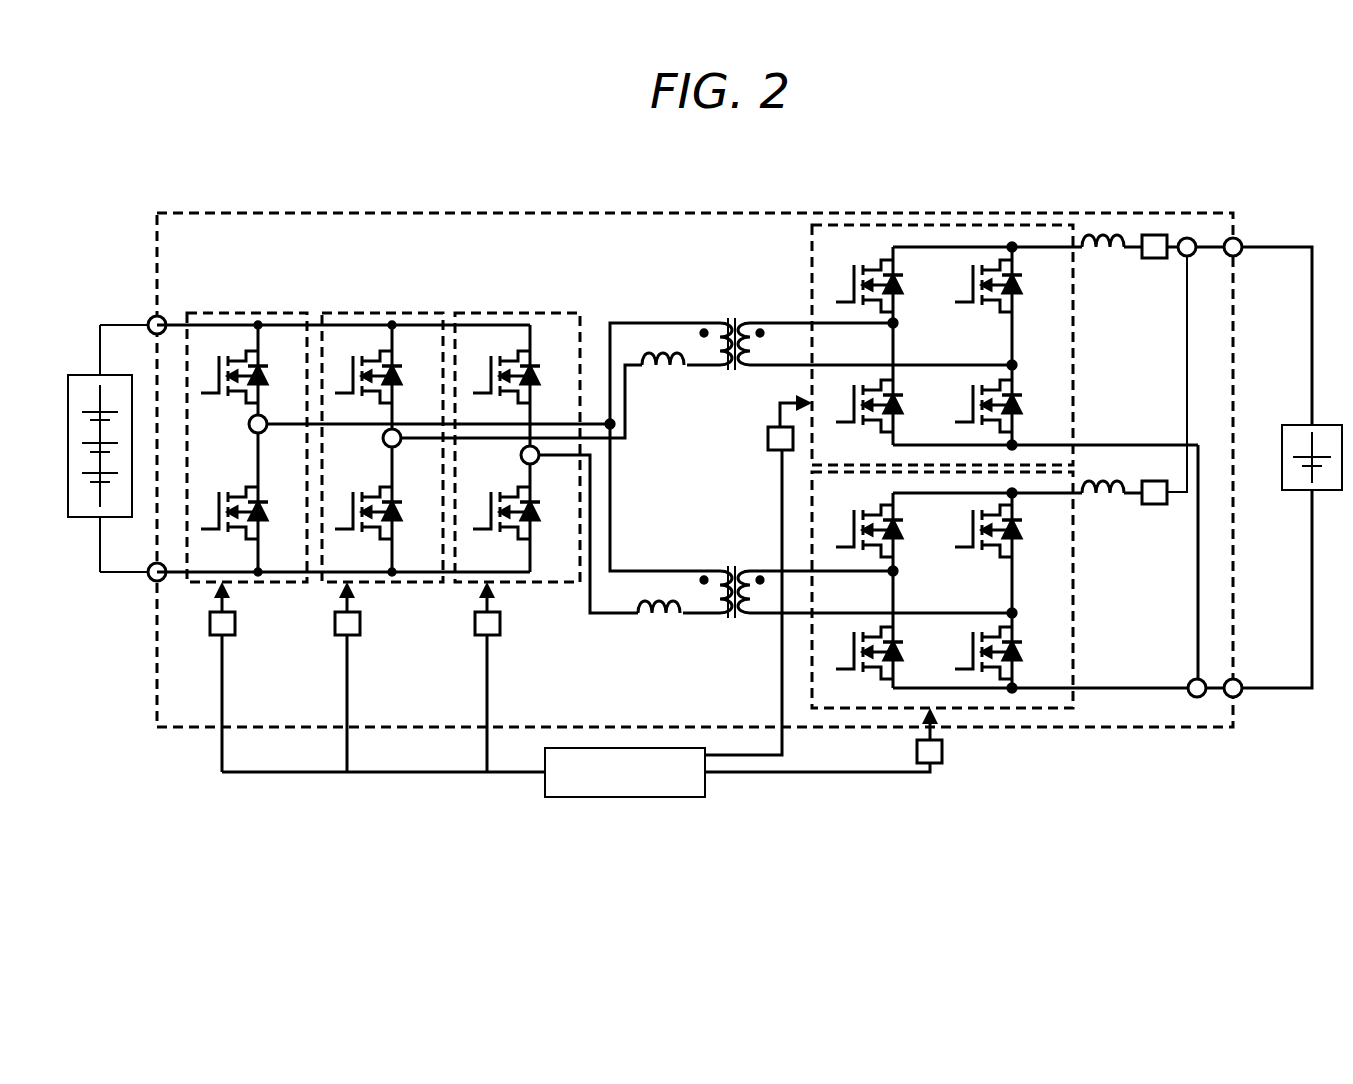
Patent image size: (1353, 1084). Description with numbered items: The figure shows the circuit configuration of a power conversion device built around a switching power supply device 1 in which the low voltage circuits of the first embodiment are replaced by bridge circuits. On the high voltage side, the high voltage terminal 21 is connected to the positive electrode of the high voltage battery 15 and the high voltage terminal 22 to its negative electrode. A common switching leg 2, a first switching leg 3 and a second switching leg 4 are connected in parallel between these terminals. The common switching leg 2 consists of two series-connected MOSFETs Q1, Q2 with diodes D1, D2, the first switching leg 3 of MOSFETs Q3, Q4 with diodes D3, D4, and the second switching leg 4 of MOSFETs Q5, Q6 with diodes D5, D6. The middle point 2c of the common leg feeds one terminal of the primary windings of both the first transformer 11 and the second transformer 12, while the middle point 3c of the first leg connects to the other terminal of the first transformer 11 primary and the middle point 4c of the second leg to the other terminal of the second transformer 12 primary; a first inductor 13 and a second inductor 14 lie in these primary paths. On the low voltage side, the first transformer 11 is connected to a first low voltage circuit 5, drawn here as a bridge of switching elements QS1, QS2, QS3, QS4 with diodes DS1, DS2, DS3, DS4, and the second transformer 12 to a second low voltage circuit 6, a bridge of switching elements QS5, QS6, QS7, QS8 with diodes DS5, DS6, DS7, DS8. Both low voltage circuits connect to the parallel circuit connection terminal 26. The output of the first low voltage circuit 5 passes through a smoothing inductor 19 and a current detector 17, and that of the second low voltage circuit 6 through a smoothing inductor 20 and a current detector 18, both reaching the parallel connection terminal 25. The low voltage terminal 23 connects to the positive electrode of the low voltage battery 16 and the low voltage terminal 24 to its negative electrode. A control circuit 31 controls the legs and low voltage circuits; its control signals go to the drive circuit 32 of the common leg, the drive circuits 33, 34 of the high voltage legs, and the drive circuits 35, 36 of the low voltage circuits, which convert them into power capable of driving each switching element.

The switching power supply device 1 is at (1127, 728).
The common switching leg 2 is at (244, 313).
The first switching leg 3 is at (386, 313).
The second switching leg 4 is at (514, 313).
The first low voltage circuit 5 is at (1005, 345).
The second low voltage circuit 6 is at (1004, 591).
The first transformer 11 is at (732, 321).
The second transformer 12 is at (738, 561).
The first inductor 13 is at (665, 372).
The second inductor 14 is at (657, 620).
The high voltage battery 15 is at (92, 378).
The low voltage battery 16 is at (1300, 492).
The current detector 17 is at (1150, 260).
The current detector 18 is at (1150, 507).
The smoothing inductor 19 is at (1105, 255).
The smoothing inductor 20 is at (1105, 500).
The high voltage terminal 21 is at (152, 318).
The high voltage terminal 22 is at (150, 580).
The low voltage terminal 23 is at (1240, 257).
The low voltage terminal 24 is at (1238, 697).
The parallel connection terminal 25 is at (1195, 257).
The parallel circuit connection terminal 26 is at (1190, 678).
The control circuit 31 is at (545, 792).
The drive circuit of common switching leg 32 is at (237, 621).
The drive circuit of high voltage circuit 33 is at (362, 621).
The drive circuit of high voltage circuit 34 is at (502, 621).
The drive circuit of low voltage circuit 35 is at (769, 436).
The drive circuit of low voltage circuit 36 is at (943, 745).
The middle point of common switching leg 2c is at (250, 430).
The middle point of first switching leg 3c is at (386, 444).
The middle point of second switching leg 4c is at (523, 456).
The MOSFET Q1 is at (234, 366).
The MOSFET Q2 is at (234, 526).
The MOSFET Q3 is at (368, 366).
The MOSFET Q4 is at (368, 526).
The MOSFET Q5 is at (505, 366).
The MOSFET Q6 is at (505, 526).
The diode D1 is at (273, 391).
The diode D2 is at (273, 494).
The diode D3 is at (408, 391).
The diode D4 is at (408, 494).
The diode D5 is at (546, 390).
The diode D6 is at (546, 492).
The switching element QS1 is at (861, 423).
The switching element QS2 is at (861, 272).
The switching element QS3 is at (970, 403).
The switching element QS4 is at (968, 281).
The rectifier switching element QS5 is at (861, 668).
The rectifier switching element QS6 is at (861, 520).
The rectifier switching element QS7 is at (970, 650).
The rectifier switching element QS8 is at (968, 528).
The diode DS1 is at (914, 420).
The diode DS2 is at (914, 300).
The diode DS3 is at (1034, 420).
The diode DS4 is at (1034, 300).
The rectifier diode DS5 is at (914, 667).
The rectifier diode DS6 is at (914, 546).
The rectifier diode DS7 is at (1034, 667).
The rectifier diode DS8 is at (1034, 546).